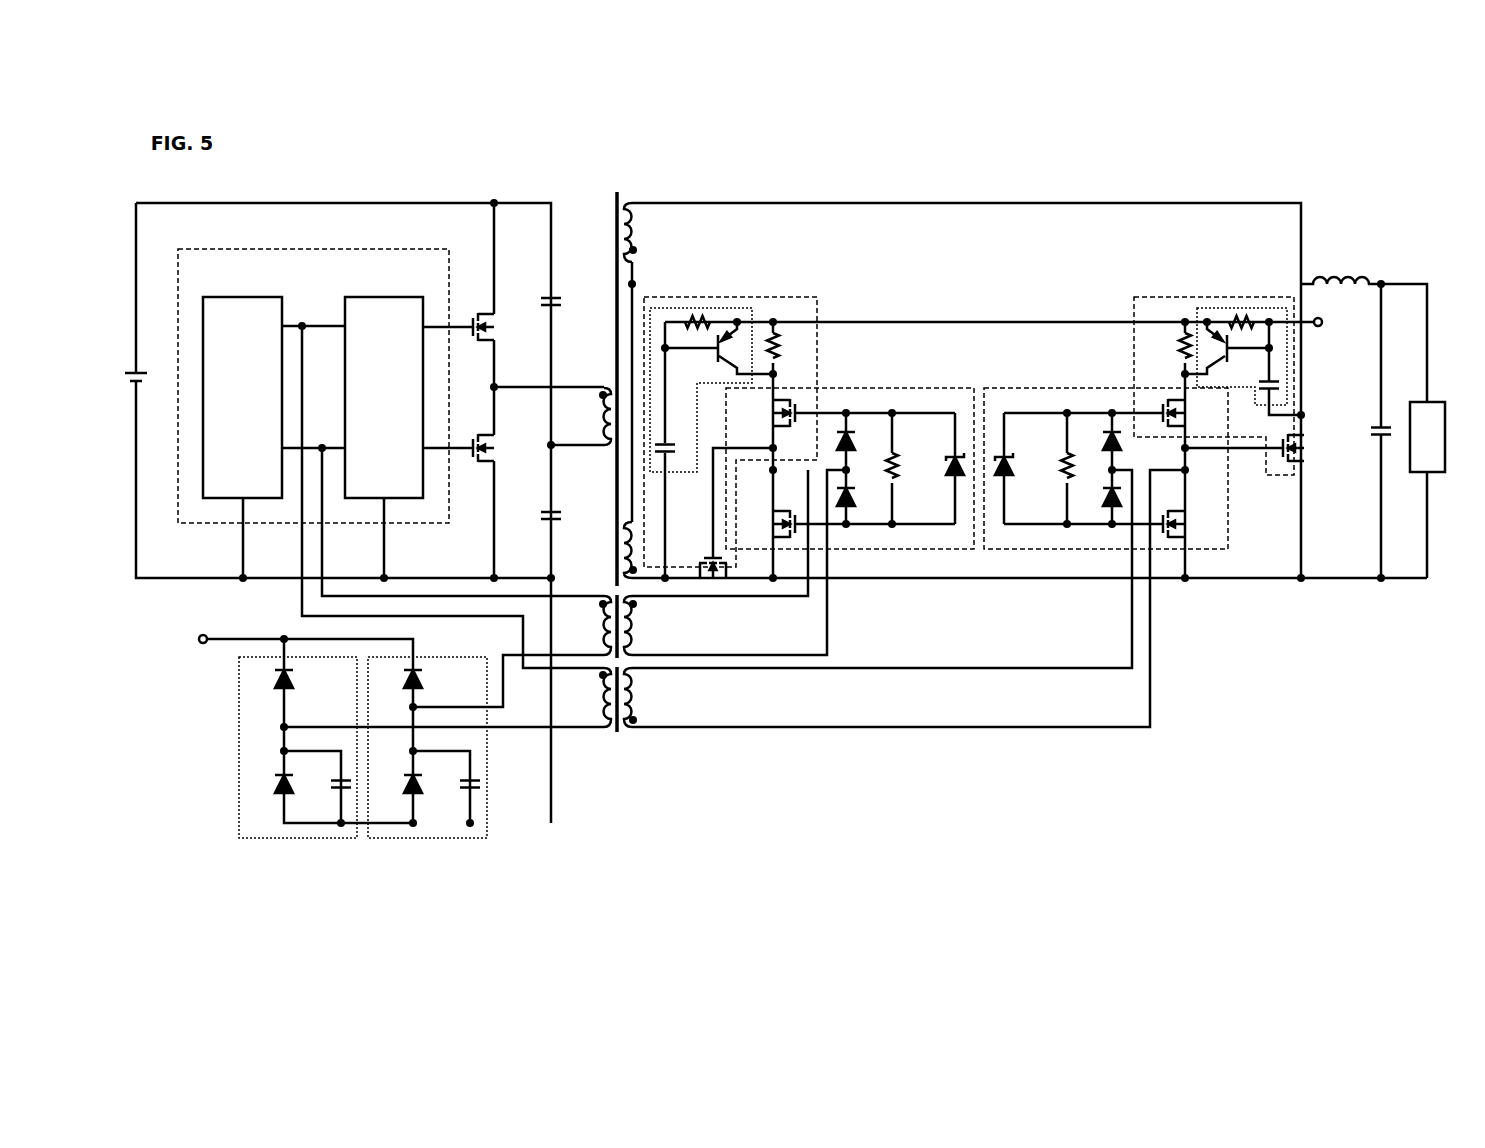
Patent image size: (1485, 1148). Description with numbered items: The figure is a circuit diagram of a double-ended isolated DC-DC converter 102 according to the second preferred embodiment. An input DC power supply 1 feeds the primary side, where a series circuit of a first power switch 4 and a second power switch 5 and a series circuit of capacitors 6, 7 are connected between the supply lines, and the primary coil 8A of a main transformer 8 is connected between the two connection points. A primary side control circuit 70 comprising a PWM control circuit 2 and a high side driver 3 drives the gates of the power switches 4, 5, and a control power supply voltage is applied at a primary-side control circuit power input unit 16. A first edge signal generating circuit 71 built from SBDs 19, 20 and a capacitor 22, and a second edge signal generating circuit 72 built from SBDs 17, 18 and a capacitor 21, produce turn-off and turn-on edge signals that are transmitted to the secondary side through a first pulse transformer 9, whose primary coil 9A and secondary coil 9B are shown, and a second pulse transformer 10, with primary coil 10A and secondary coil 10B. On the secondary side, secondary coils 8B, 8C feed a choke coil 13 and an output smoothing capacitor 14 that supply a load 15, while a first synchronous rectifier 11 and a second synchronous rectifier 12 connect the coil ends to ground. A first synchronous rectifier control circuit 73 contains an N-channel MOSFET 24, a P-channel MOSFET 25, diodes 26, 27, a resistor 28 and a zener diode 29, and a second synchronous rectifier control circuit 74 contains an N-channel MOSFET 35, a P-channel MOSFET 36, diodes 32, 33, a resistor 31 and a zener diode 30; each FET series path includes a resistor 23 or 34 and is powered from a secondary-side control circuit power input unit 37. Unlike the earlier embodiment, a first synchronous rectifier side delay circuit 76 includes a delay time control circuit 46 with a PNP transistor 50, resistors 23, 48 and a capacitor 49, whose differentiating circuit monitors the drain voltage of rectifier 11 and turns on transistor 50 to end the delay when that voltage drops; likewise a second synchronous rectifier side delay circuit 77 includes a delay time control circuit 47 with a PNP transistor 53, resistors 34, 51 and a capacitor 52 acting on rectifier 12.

The input DC power supply 1 is at (122, 378).
The PWM control circuit 2 is at (243, 297).
The high side driver 3 is at (388, 297).
The first power switch 4 is at (479, 435).
The second power switch 5 is at (479, 313).
The capacitor 6 is at (541, 298).
The capacitor 7 is at (541, 515).
The main transformer 8 is at (613, 201).
The primary coil 8A is at (586, 416).
The secondary coil 8B is at (621, 522).
The secondary coil 8C is at (649, 232).
The first pulse transformer 9 is at (609, 581).
The primary coil of first pulse transformer 9A is at (585, 625).
The secondary coil of first pulse transformer 9B is at (650, 625).
The second pulse transformer 10 is at (628, 746).
The primary coil of second pulse transformer 10A is at (583, 697).
The secondary coil of second pulse transformer 10B is at (652, 697).
The first synchronous rectifier 11 is at (722, 582).
The second synchronous rectifier 12 is at (1307, 448).
The choke coil 13 is at (1341, 267).
The output smoothing capacitor 14 is at (1366, 430).
The load 15 is at (1442, 402).
The primary-side control circuit power input unit 16 is at (203, 624).
The schottky barrier diode 17 is at (270, 678).
The schottky barrier diode 18 is at (269, 785).
The schottky barrier diode 19 is at (399, 678).
The schottky barrier diode 20 is at (397, 785).
The capacitor 21 is at (327, 785).
The capacitor 22 is at (455, 785).
The resistor 23 is at (788, 347).
The N-channel MOSFET 24 is at (770, 413).
The P-channel MOSFET 25 is at (770, 524).
The diode 26 is at (858, 440).
The diode 27 is at (858, 497).
The resistor 28 is at (903, 466).
The zener diode 29 is at (948, 478).
The zener diode 30 is at (1014, 478).
The resistor 31 is at (1054, 466).
The diode 32 is at (1101, 440).
The diode 33 is at (1101, 497).
The resistor 34 is at (1172, 347).
The N-channel MOSFET 35 is at (1191, 413).
The P-channel MOSFET 36 is at (1191, 524).
The secondary-side control circuit power input unit 37 is at (1335, 322).
The delay time control circuit 46 is at (752, 308).
The delay time control circuit 47 is at (1197, 308).
The resistor 48 is at (700, 312).
The capacitor 49 is at (675, 434).
The PNP transistor 50 is at (729, 349).
The resistor 51 is at (1245, 312).
The capacitor 52 is at (1287, 384).
The PNP transistor 53 is at (1221, 350).
The primary side control circuit 70 is at (313, 249).
The first edge signal generating circuit 71 is at (487, 843).
The second edge signal generating circuit 72 is at (237, 843).
The first synchronous rectifier control circuit 73 is at (890, 388).
The second synchronous rectifier control circuit 74 is at (1030, 388).
The first synchronous rectifier side delay circuit 76 is at (817, 297).
The second synchronous rectifier side delay circuit 77 is at (1134, 297).
The double-ended isolated DC-DC converter 102 is at (1296, 165).